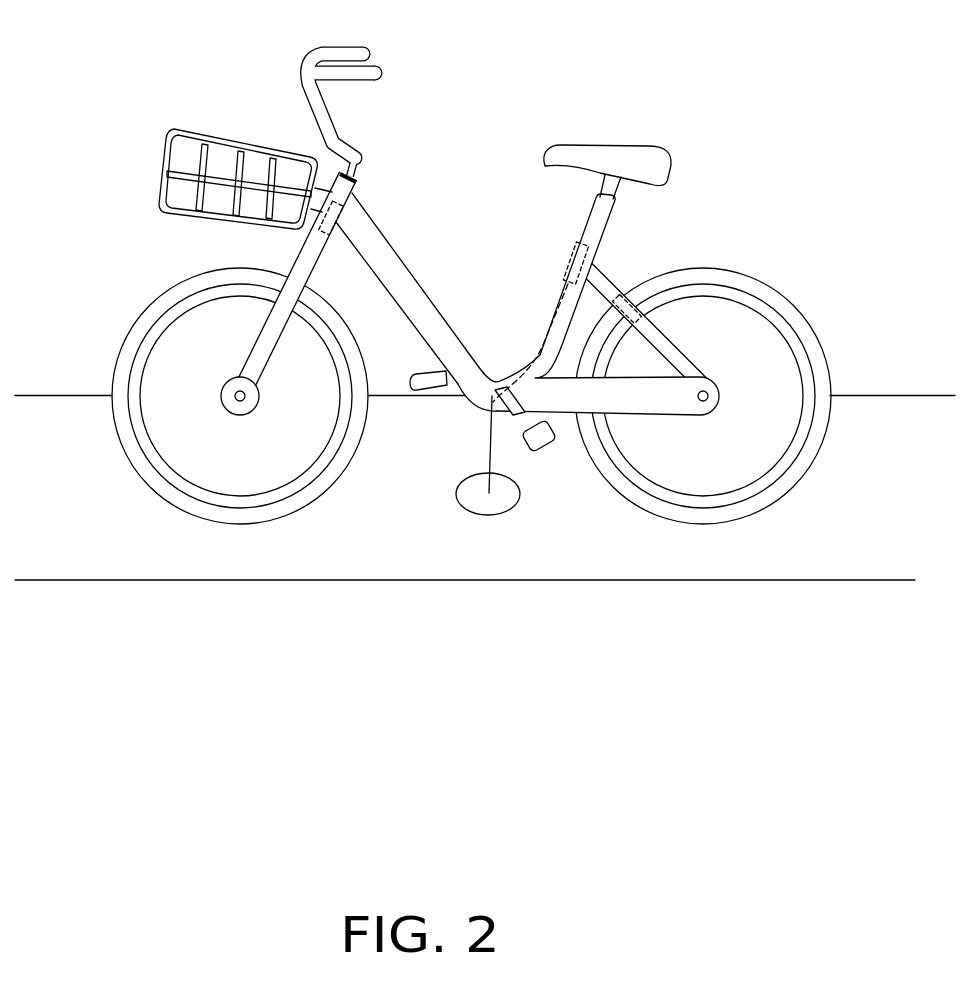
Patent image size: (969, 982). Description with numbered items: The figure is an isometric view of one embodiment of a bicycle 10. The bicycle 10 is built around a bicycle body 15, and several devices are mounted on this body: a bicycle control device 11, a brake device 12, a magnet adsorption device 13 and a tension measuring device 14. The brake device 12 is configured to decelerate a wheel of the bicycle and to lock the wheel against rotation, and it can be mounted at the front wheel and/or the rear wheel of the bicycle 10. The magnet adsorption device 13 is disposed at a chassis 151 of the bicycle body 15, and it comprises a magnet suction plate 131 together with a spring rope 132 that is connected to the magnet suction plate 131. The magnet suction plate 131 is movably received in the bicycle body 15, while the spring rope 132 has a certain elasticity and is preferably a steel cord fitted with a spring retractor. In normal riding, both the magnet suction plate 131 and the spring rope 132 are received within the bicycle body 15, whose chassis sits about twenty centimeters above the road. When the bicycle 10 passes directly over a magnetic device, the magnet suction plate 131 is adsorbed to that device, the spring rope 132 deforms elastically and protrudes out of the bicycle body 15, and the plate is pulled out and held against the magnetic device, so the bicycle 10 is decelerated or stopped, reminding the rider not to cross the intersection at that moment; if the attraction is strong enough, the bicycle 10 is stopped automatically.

The bicycle 10 is at (471, 354).
The bicycle control device 11 is at (336, 205).
The brake device 12 is at (631, 293).
The magnet adsorption device 13 is at (426, 549).
The magnet suction plate 131 is at (480, 517).
The spring rope 132 is at (488, 456).
The tension measuring device 14 is at (572, 254).
The bicycle body 15 is at (461, 392).
The chassis 151 is at (473, 389).